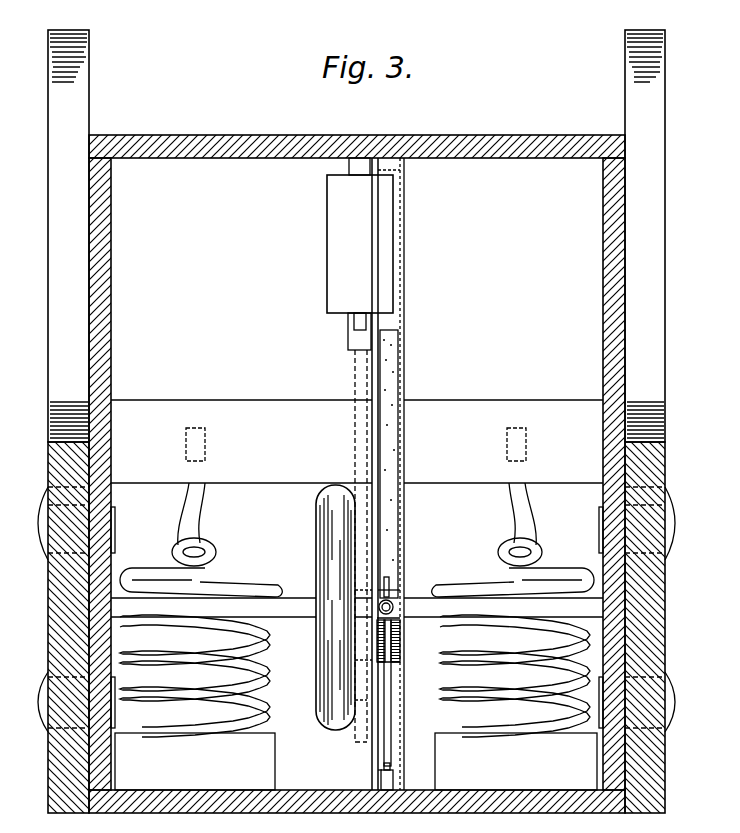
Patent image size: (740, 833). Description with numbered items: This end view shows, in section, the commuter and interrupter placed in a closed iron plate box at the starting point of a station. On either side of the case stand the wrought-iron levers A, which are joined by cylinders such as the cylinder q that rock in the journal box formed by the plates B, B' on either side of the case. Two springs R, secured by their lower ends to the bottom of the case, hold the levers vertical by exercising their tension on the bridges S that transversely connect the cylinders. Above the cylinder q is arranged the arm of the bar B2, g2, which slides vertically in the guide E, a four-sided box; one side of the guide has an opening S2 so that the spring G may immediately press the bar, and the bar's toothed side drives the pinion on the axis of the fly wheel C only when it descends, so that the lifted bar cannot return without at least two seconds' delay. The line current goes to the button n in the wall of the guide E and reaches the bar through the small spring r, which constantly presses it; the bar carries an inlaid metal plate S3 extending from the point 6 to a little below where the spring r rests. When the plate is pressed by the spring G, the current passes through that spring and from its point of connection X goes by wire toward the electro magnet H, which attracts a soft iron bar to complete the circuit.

The lever A is at (356, 236).
The plate B is at (76, 627).
The plate B' is at (637, 627).
The bar B2 is at (390, 369).
The fly wheel C is at (344, 607).
The guide E is at (370, 527).
The bar g2 is at (390, 533).
The spring G is at (391, 696).
The electro magnet H is at (360, 235).
The button n is at (398, 605).
The cylinder q is at (357, 441).
The small spring r is at (389, 577).
The spring R is at (355, 676).
The bridge S is at (356, 444).
The opening S2 is at (398, 636).
The inlaid metal plate S3 is at (398, 664).
The point of connection X is at (395, 778).
The point 6 is at (380, 773).